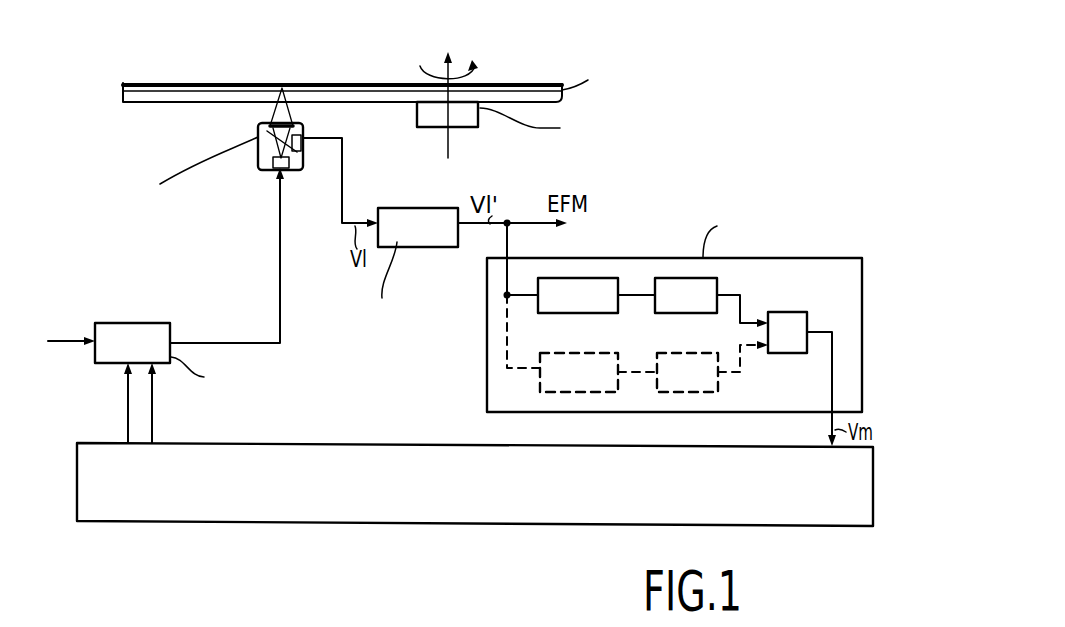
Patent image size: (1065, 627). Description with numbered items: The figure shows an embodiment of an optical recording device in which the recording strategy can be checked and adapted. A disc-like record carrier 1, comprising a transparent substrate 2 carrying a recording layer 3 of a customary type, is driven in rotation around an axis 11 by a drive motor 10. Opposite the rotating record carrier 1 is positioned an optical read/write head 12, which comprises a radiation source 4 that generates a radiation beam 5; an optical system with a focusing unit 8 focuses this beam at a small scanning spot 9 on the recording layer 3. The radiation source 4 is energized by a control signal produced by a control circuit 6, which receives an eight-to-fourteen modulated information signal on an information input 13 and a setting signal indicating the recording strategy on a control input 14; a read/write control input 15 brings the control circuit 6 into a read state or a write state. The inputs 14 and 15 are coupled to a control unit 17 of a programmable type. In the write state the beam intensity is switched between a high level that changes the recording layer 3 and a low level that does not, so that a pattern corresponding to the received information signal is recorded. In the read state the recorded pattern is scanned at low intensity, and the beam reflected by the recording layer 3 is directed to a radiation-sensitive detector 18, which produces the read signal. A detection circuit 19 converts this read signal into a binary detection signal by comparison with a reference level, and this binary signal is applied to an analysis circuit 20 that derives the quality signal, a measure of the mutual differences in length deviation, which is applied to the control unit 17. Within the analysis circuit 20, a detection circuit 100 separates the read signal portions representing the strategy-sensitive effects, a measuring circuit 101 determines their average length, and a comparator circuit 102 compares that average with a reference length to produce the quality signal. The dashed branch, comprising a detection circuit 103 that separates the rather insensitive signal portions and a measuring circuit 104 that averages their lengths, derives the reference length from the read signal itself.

The record carrier 1 is at (122, 92).
The transparent substrate 2 is at (150, 100).
The recording layer 3 is at (150, 84).
The radiation source 4 is at (270, 170).
The radiation beam 5 is at (295, 125).
The control circuit 6 is at (150, 322).
The focusing unit 8 is at (268, 130).
The scanning spot 9 is at (283, 90).
The drive motor 10 is at (479, 116).
The axis 11 is at (466, 66).
The optical read/write head 12 is at (218, 134).
The information input 13 is at (90, 332).
The control input 14 is at (122, 366).
The read/write control input 15 is at (156, 366).
The control unit 17 is at (211, 512).
The radiation-sensitive detector 18 is at (300, 150).
The detection circuit 19 is at (423, 240).
The analysis circuit 20 is at (674, 303).
The detection circuit 100 is at (592, 300).
The measuring circuit 101 is at (688, 305).
The comparator circuit 102 is at (797, 312).
The detection circuit 103 is at (544, 354).
The measuring circuit 104 is at (716, 392).